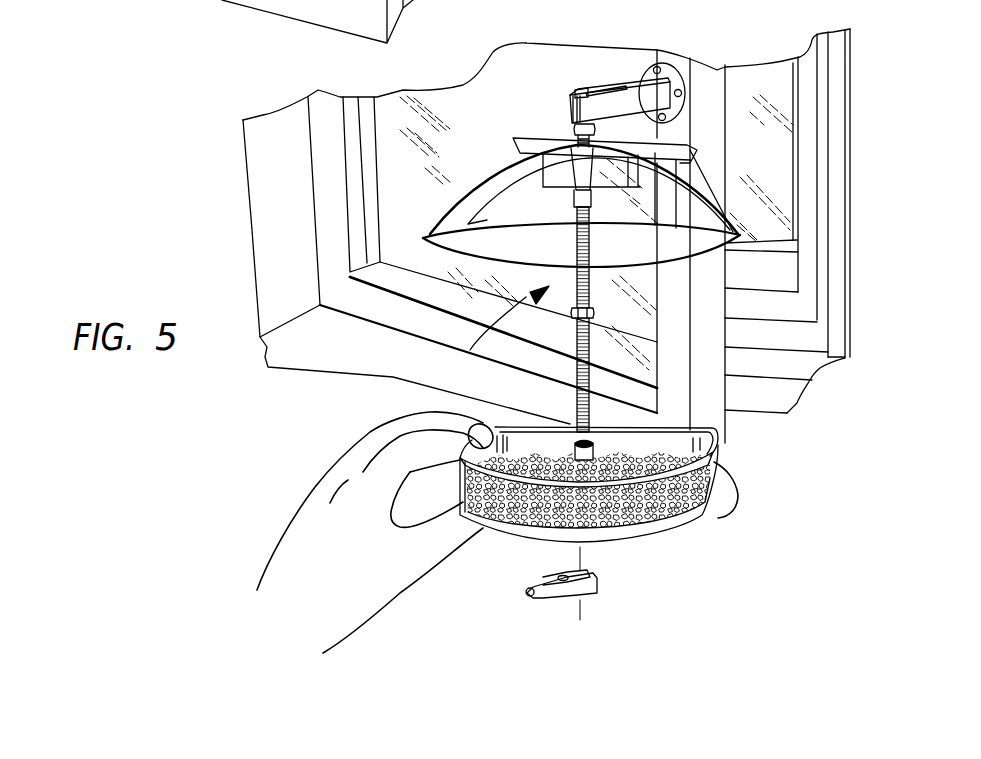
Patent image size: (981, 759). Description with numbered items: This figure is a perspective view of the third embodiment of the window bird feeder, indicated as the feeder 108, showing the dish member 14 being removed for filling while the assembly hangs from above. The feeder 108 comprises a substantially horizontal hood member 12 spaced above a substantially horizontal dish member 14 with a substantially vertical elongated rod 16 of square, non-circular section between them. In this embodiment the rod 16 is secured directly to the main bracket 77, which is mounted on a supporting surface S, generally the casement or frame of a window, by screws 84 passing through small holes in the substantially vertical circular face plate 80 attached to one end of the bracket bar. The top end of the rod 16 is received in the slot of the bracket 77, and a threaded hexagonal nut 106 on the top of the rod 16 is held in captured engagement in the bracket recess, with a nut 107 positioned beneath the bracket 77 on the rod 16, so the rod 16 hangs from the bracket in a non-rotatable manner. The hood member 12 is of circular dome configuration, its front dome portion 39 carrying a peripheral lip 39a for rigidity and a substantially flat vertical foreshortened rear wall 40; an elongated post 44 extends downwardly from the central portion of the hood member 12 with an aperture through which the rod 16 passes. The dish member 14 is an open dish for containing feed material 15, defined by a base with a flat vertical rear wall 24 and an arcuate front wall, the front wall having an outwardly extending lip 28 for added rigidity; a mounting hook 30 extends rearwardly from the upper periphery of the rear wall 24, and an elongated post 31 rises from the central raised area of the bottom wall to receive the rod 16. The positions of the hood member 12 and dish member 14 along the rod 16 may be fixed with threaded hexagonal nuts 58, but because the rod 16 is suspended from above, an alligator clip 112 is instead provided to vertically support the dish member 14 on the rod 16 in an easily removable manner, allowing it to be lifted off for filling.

The hood member 12 is at (532, 333).
The dish member 14 is at (616, 487).
The feed material 15 is at (544, 457).
The elongated rod 16 is at (474, 319).
The rear wall 24 is at (711, 505).
The lip 28 is at (716, 450).
The dish member mounting hook 30 is at (600, 441).
The post 31 is at (657, 434).
The dome portion 39 is at (510, 202).
The peripheral lip 39a is at (510, 245).
The rear wall 40 is at (494, 71).
The post 44 is at (577, 198).
The threaded hexagonal nuts 58 is at (509, 329).
The main bracket 77 is at (591, 77).
The face plate 80 is at (711, 69).
The screws 84 is at (661, 67).
The hexagonal nut 106 is at (588, 88).
The nut 107 is at (573, 128).
The feeder 108 is at (576, 314).
The alligator clip 112 is at (557, 594).
The supporting surface S is at (704, 393).